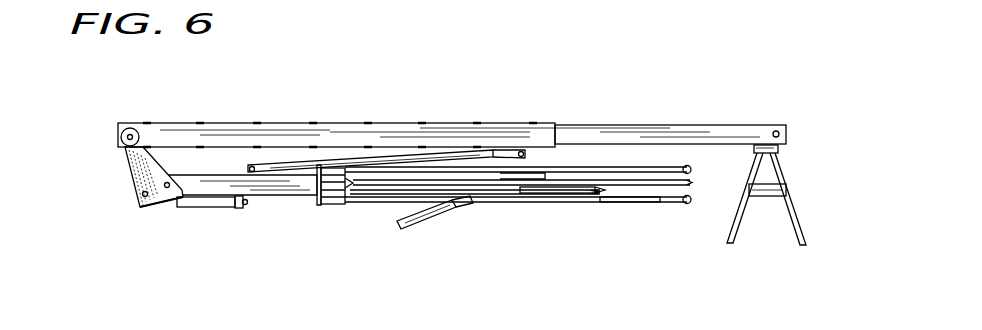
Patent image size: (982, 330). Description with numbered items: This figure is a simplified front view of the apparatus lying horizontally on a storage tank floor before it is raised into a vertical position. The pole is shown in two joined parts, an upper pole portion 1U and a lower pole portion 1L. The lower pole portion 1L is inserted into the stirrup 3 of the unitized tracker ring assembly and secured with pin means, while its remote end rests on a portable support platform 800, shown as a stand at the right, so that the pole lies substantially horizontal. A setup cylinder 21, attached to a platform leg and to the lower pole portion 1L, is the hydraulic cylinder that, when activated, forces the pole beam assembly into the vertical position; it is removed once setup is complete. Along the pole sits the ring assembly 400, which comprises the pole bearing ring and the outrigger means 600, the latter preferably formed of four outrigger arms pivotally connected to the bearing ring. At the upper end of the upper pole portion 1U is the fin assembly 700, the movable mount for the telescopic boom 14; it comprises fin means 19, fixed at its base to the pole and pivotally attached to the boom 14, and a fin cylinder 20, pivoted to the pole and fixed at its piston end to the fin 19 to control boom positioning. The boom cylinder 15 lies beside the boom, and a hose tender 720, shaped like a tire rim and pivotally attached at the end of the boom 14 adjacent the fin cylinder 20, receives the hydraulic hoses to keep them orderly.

The telescopic boom 14 is at (392, 123).
The hose tender means 720 is at (121, 133).
The fin means 19 is at (130, 175).
The fin assembly 700 is at (135, 222).
The upper pole portion 1U is at (185, 174).
The boom cylinder 15 is at (344, 158).
The fin cylinder 20 is at (208, 207).
The ring assembly 400 is at (327, 203).
The lower pole portion 1L is at (508, 190).
The setup cylinder 21 is at (413, 228).
The stirrup 3 is at (548, 198).
The outrigger means 600 is at (637, 203).
The portable support platform 800 is at (786, 192).